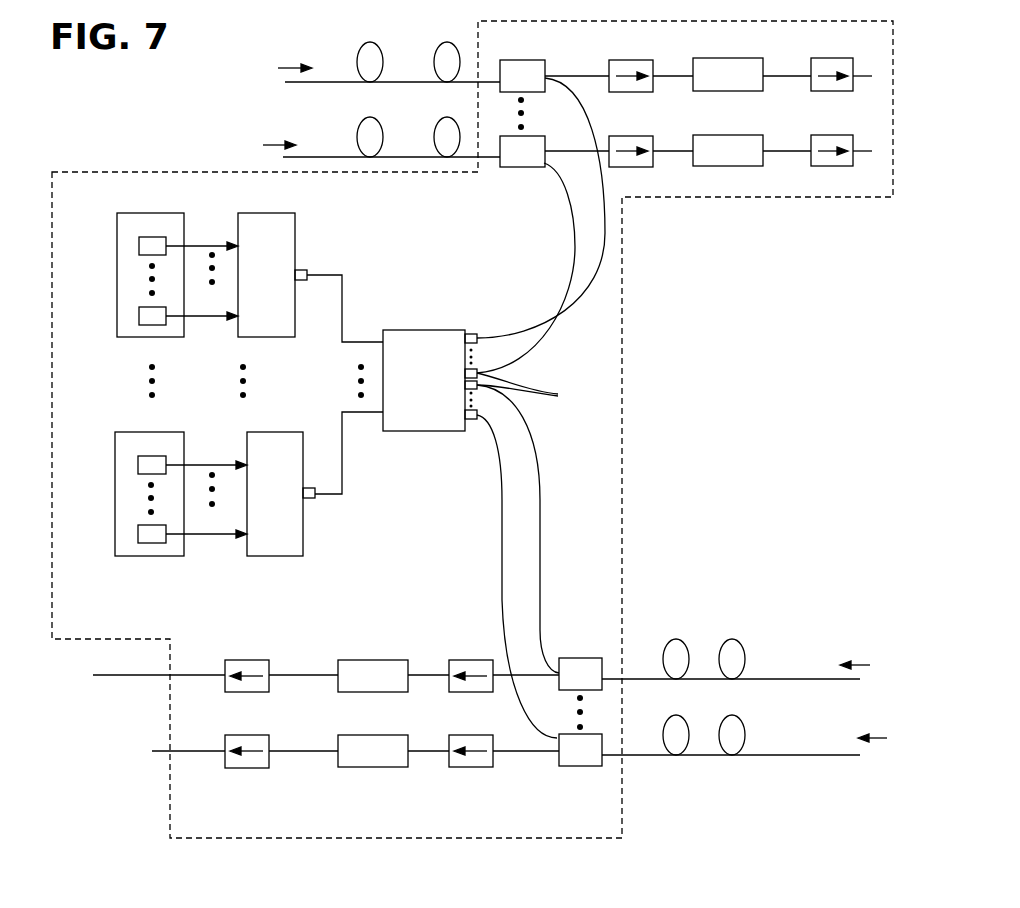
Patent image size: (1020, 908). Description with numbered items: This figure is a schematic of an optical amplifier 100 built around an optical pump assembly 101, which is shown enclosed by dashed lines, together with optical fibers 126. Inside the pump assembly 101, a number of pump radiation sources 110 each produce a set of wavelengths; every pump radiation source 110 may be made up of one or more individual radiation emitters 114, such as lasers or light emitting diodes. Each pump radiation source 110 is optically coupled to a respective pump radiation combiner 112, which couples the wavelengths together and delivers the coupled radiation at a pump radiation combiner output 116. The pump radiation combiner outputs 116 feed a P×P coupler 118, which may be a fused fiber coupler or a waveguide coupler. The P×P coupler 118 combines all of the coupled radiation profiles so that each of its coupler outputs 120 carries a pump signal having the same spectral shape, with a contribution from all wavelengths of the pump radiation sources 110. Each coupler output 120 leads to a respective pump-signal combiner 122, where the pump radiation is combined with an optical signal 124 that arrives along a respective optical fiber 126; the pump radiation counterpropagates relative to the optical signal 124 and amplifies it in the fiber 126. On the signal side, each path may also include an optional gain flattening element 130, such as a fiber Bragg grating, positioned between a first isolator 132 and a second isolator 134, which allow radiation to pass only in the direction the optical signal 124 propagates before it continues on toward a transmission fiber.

The optical amplifier 100 is at (876, 312).
The optical pump assembly 101 is at (112, 172).
The pump radiation source 110 is at (170, 213).
The pump radiation combiner 112 is at (272, 213).
The individual radiation emitter 114 is at (141, 237).
The pump radiation combiner output 116 is at (303, 270).
The P×P coupler 118 is at (408, 330).
The coupler output 120 is at (480, 334).
The pump-signal combiner 122 is at (528, 60).
The optical signal 124 is at (283, 68).
The optical fiber 126 is at (377, 43).
The gain flattening element 130 is at (729, 58).
The first isolator 132 is at (629, 60).
The second isolator 134 is at (831, 58).